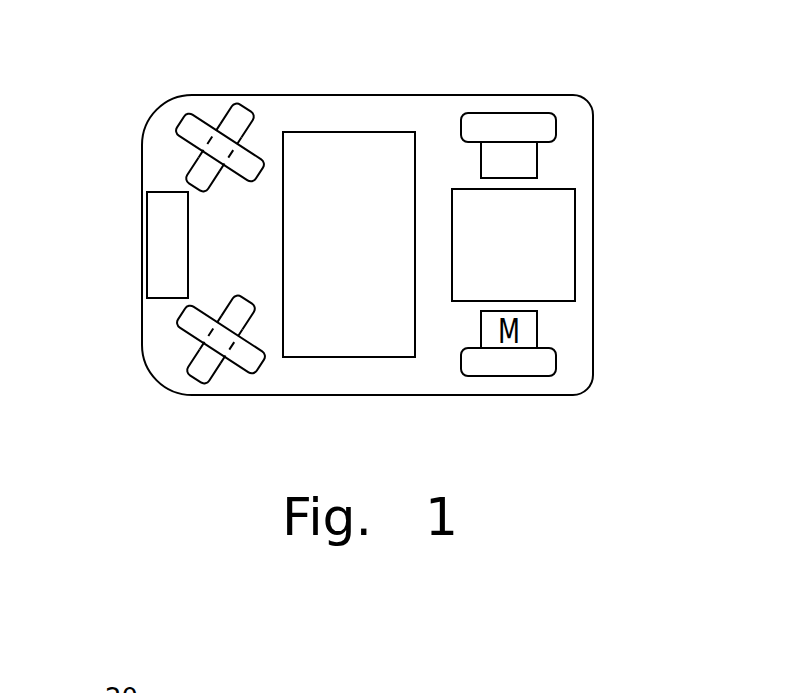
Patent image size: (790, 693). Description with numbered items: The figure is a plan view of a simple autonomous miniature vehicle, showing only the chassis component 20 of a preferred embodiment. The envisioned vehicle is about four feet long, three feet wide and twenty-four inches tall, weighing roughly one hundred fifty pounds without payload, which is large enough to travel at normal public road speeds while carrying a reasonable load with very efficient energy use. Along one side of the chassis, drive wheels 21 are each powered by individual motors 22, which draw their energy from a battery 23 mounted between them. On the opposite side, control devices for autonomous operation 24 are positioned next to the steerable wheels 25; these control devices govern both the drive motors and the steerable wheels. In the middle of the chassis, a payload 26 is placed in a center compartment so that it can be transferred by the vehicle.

The chassis component 20 is at (142, 78).
The drive wheels 21 is at (557, 128).
The motors 22 is at (537, 162).
The battery 23 is at (575, 270).
The control devices for autonomous operation 24 is at (147, 258).
The steerable wheels 25 is at (240, 370).
The payload 26 is at (350, 357).